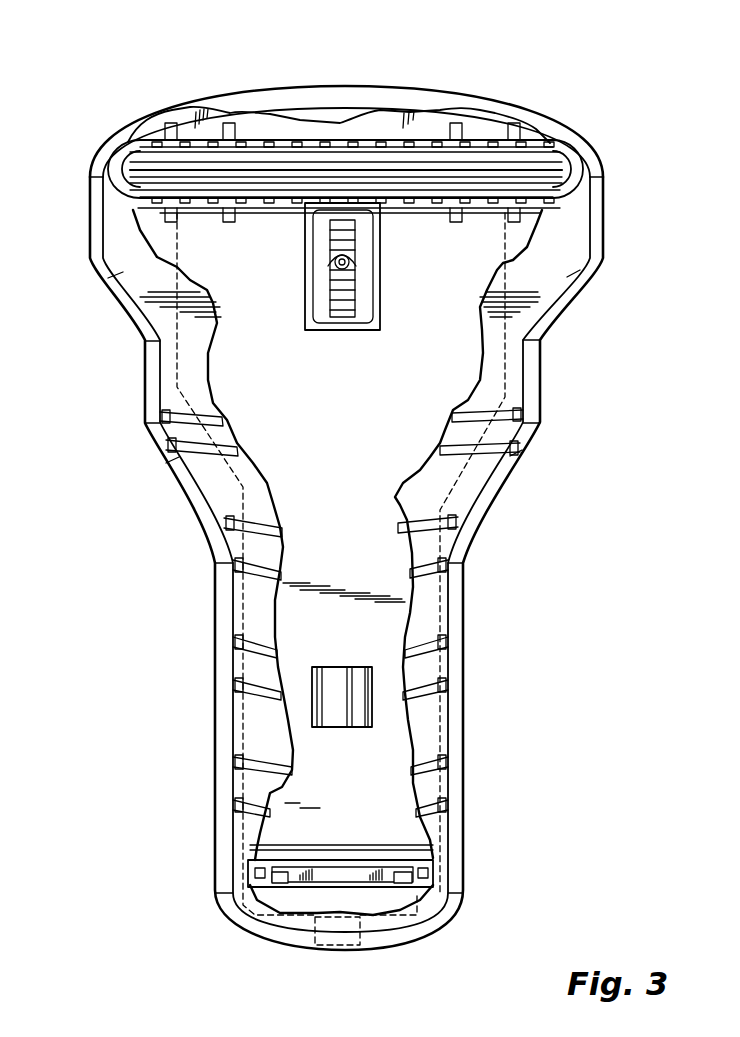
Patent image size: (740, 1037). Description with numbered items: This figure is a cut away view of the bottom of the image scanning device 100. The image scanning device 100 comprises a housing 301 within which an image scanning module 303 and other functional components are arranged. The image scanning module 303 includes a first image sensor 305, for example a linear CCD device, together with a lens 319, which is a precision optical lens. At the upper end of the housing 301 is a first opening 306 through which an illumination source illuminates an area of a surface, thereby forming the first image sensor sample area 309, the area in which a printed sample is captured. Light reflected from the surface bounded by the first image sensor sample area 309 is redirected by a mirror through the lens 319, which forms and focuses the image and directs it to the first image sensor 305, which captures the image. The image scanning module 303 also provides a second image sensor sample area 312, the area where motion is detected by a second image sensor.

The image scanning device 100 is at (124, 99).
The housing 301 is at (541, 397).
The image scanning module 303 is at (400, 500).
The first image sensor 305 is at (347, 870).
The first opening 306 is at (517, 177).
The first image sensor sample area 309 is at (473, 163).
The second image sensor sample area 312 is at (348, 273).
The lens 319 is at (340, 707).